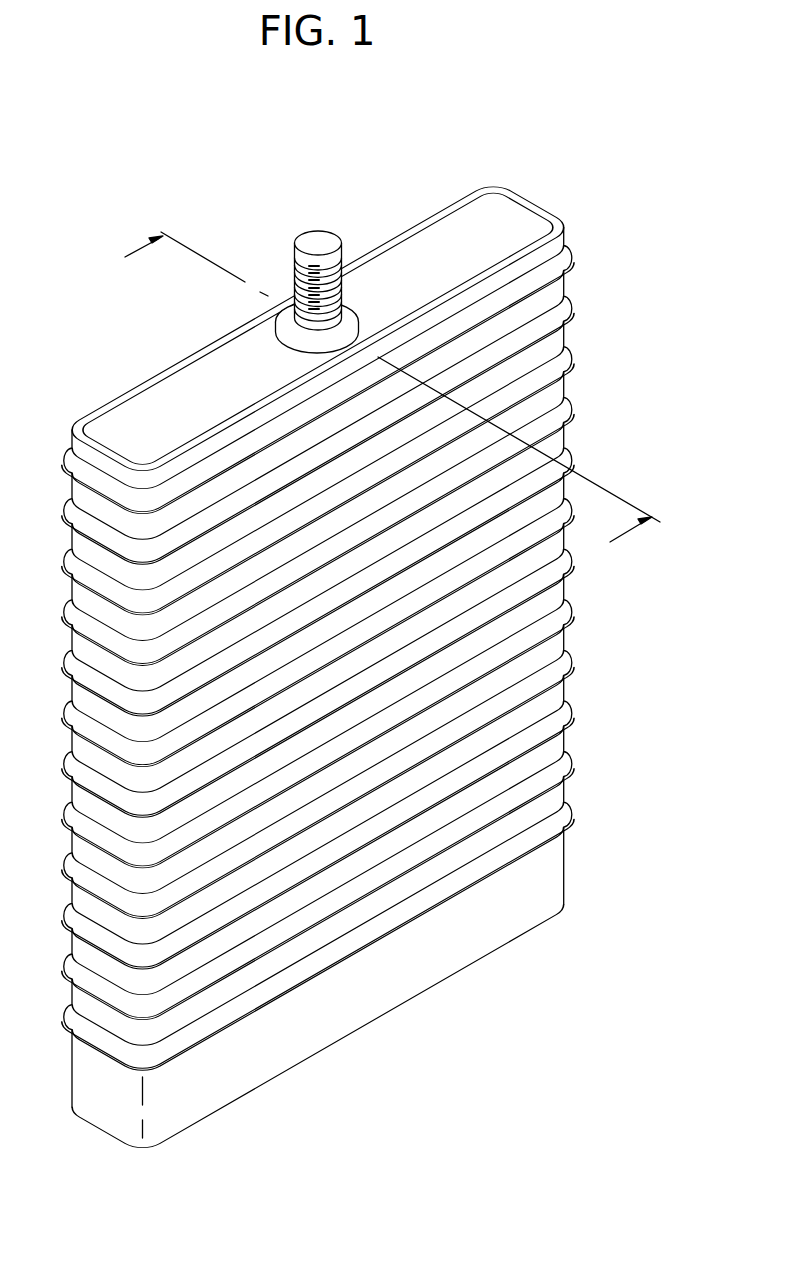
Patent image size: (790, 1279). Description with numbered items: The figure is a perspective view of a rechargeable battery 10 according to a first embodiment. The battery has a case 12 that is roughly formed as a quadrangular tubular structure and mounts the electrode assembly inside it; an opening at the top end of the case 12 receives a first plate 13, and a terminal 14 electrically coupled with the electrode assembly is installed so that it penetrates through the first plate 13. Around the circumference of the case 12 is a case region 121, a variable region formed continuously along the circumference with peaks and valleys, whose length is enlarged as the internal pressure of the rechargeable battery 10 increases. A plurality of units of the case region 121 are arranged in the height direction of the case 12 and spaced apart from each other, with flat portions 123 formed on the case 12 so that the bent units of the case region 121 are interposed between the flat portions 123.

The rechargeable battery 10 is at (289, 136).
The case 12 is at (366, 679).
The first plate 13 is at (505, 218).
The terminal 14 is at (322, 241).
The case region 121 is at (570, 698).
The flat portions 123 is at (563, 595).